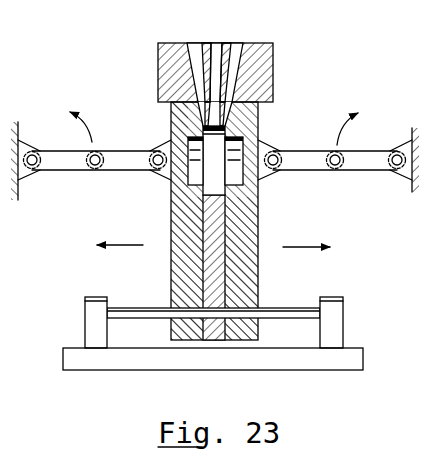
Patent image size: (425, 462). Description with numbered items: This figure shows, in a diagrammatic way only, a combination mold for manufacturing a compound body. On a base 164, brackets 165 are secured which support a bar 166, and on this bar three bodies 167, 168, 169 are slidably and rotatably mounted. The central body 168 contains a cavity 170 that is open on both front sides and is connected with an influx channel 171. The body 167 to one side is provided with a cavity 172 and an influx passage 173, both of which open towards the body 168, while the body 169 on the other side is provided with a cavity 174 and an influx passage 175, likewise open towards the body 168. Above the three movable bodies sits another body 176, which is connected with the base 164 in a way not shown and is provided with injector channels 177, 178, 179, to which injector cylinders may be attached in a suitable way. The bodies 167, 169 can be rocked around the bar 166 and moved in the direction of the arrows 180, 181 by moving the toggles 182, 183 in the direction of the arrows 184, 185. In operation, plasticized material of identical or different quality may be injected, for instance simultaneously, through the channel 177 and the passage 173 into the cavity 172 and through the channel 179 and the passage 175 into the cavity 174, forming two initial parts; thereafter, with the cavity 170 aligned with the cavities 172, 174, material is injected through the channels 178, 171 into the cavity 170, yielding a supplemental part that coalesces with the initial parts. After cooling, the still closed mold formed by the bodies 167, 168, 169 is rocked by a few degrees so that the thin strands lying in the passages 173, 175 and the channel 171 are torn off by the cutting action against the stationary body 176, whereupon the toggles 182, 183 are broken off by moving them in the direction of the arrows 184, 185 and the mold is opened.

The base 164 is at (223, 368).
The brackets 165 is at (90, 325).
The bar 166 is at (153, 297).
The body 167 is at (178, 258).
The body 168 is at (215, 223).
The body 169 is at (263, 268).
The cavity 170 is at (218, 153).
The influx channel 171 is at (257, 90).
The cavity 172 is at (197, 172).
The influx passage 173 is at (175, 118).
The cavity 174 is at (237, 180).
The influx passage 175 is at (228, 125).
The body 176 is at (268, 57).
The injector channel 177 is at (195, 50).
The injector channel 178 is at (217, 52).
The injector channel 179 is at (238, 52).
The arrow 180 is at (100, 245).
The arrow 181 is at (323, 246).
The toggle 182 is at (67, 168).
The toggle 183 is at (362, 171).
The arrow 184 is at (71, 117).
The arrow 185 is at (356, 119).